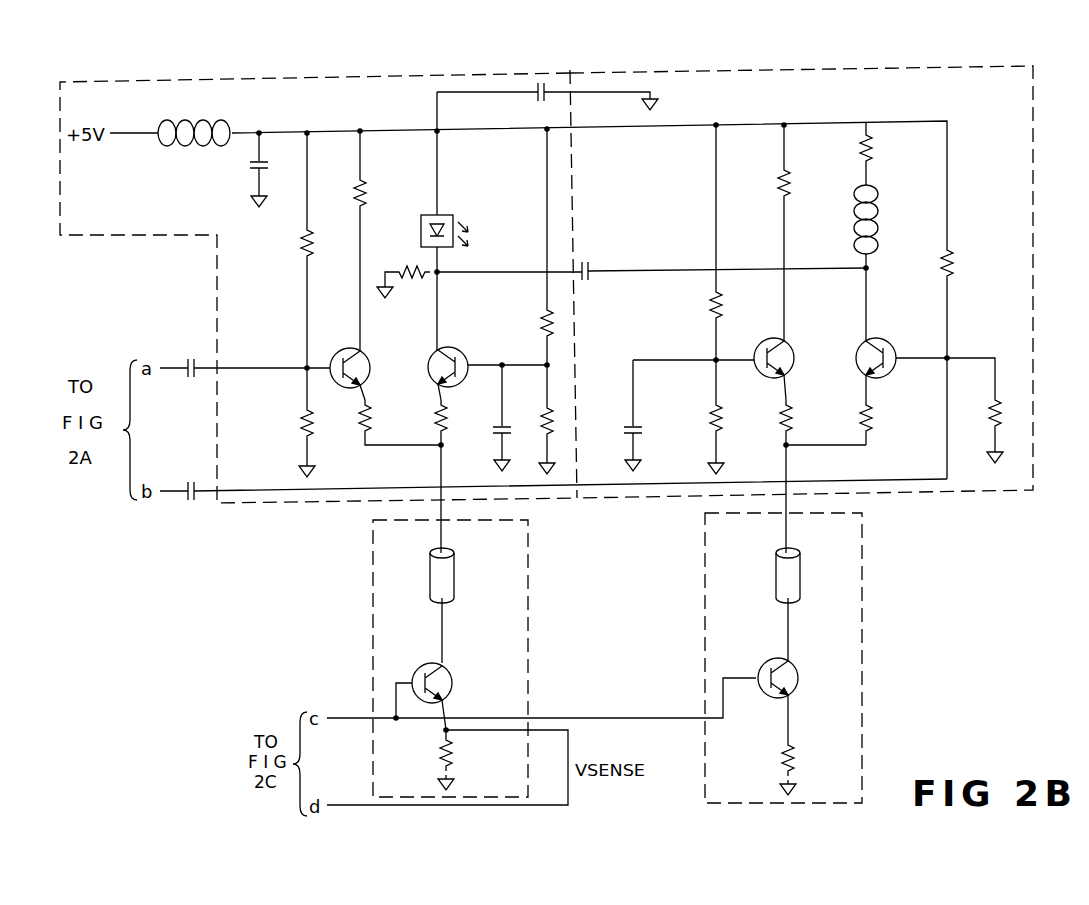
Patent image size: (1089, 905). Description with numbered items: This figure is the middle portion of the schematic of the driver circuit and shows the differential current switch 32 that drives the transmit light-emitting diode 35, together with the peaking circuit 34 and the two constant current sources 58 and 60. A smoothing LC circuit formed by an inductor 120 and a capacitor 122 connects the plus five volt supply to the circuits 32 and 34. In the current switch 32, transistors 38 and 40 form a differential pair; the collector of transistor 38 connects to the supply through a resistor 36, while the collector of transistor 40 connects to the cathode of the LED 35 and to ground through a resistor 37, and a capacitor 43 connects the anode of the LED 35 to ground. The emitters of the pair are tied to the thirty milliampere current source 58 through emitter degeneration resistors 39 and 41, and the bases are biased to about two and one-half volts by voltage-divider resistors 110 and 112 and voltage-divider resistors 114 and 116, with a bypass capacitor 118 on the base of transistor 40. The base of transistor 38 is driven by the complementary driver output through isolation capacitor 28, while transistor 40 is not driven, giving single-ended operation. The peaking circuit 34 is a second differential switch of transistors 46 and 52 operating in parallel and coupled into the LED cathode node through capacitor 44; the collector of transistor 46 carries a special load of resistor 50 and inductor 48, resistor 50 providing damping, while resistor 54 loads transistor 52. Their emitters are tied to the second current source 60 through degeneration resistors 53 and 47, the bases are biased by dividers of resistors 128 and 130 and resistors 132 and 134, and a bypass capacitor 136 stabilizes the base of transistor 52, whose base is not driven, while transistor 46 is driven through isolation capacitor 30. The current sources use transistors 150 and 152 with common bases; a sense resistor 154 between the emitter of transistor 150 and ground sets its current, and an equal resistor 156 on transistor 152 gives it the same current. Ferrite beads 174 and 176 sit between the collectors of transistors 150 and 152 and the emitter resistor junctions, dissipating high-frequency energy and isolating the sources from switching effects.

The current switch 32 is at (340, 78).
The peaking circuit 34 is at (1036, 104).
The current source 58 is at (530, 617).
The current source 60 is at (862, 582).
The inductor 120 is at (215, 118).
The capacitor 122 is at (256, 167).
The voltage-divider resistor 110 is at (302, 260).
The resistor 36 is at (373, 189).
The light-emitting diode 35 is at (458, 214).
The resistor 37 is at (406, 266).
The capacitor 43 is at (532, 98).
The capacitor 44 is at (596, 270).
The transistor 38 is at (371, 363).
The transistor 40 is at (490, 328).
The resistor 39 is at (342, 430).
The resistor 41 is at (422, 418).
The voltage-divider resistor 114 is at (541, 324).
The voltage-divider resistor 116 is at (580, 416).
The bypass capacitor 118 is at (484, 434).
The voltage-divider resistor 112 is at (286, 430).
The isolation capacitor 28 is at (192, 348).
The isolation capacitor 30 is at (190, 470).
The resistor 54 is at (768, 192).
The resistor 50 is at (852, 150).
The inductor 48 is at (880, 236).
The resistor 134 is at (958, 274).
The resistor 130 is at (706, 310).
The bypass capacitor 136 is at (644, 430).
The resistor 128 is at (730, 420).
The transistor 52 is at (802, 338).
The resistor 53 is at (802, 420).
The transistor 46 is at (858, 366).
The resistor 47 is at (882, 418).
The resistor 132 is at (998, 393).
The ferrite bead 174 is at (460, 578).
The transistor 150 is at (454, 679).
The sense resistor 154 is at (460, 752).
The ferrite bead 176 is at (776, 572).
The transistor 152 is at (756, 662).
The resistor 156 is at (772, 760).